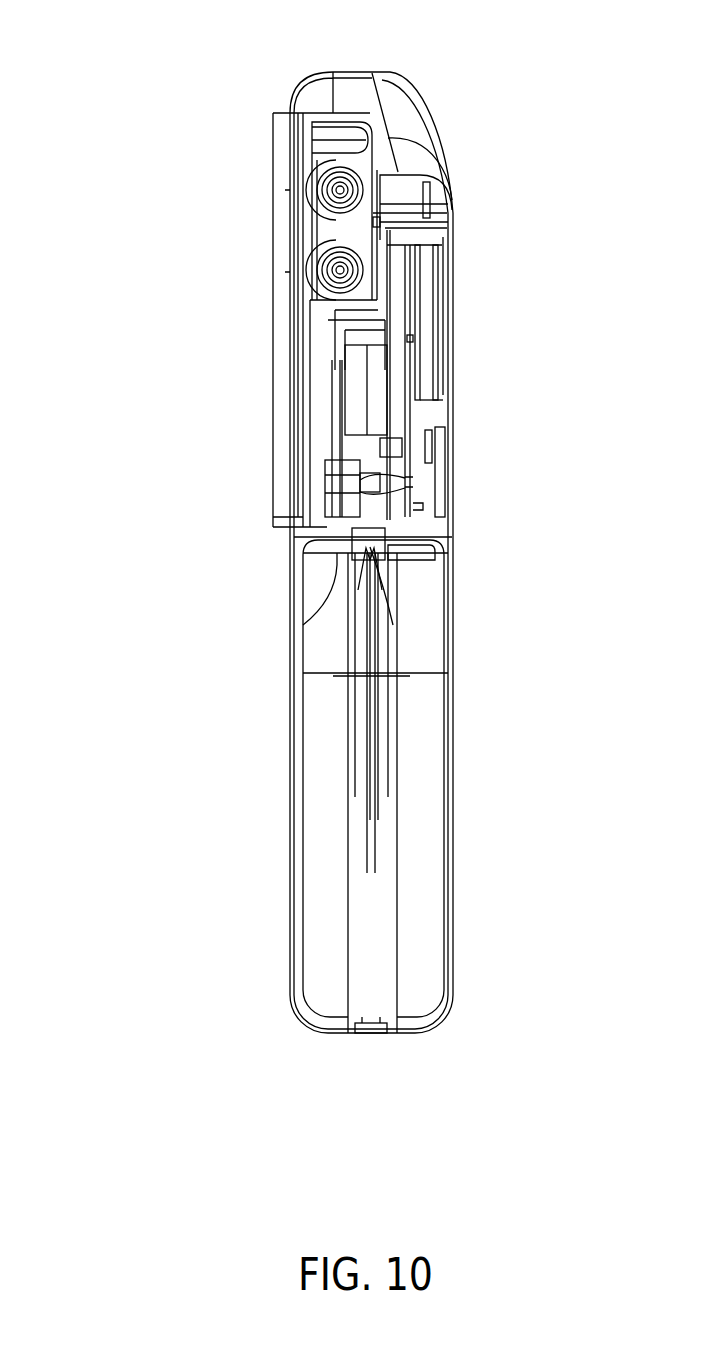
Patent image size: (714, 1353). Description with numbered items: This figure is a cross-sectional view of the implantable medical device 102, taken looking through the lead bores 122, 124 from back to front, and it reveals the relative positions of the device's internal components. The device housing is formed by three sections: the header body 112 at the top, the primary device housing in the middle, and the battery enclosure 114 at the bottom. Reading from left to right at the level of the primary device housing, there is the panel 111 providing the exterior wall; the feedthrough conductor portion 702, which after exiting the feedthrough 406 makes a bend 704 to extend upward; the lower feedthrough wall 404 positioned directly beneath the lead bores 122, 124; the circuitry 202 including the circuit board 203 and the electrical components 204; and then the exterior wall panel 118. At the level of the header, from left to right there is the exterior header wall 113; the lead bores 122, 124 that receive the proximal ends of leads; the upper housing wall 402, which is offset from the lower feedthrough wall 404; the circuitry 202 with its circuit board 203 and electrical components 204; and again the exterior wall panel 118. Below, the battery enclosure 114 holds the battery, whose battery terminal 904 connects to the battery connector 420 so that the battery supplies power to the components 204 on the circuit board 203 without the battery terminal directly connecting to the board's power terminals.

The implantable medical device 102 is at (138, 1080).
The exterior wall 111 is at (247, 467).
The header body 112 is at (413, 65).
The exterior header wall 113 is at (233, 250).
The battery enclosure 114 is at (470, 1012).
The exterior wall panel 118 is at (483, 390).
The lead bore 122 is at (338, 273).
The lead bore 124 is at (333, 188).
The circuitry 202 is at (435, 292).
The circuit board 203 is at (412, 296).
The electrical components 204 is at (430, 337).
The upper housing wall 402 is at (453, 262).
The lower feedthrough wall 404 is at (340, 437).
The feedthrough 406 is at (367, 545).
The battery connector 420 is at (372, 547).
The feedthrough conductor portion 702 is at (305, 455).
The bend 704 is at (307, 502).
The battery terminal 904 is at (423, 932).